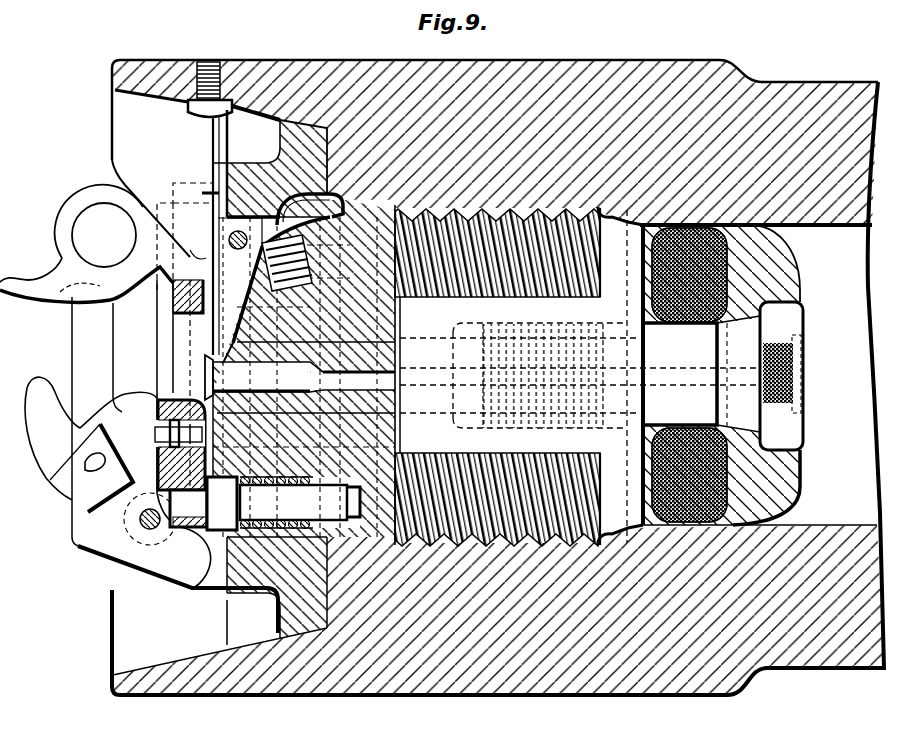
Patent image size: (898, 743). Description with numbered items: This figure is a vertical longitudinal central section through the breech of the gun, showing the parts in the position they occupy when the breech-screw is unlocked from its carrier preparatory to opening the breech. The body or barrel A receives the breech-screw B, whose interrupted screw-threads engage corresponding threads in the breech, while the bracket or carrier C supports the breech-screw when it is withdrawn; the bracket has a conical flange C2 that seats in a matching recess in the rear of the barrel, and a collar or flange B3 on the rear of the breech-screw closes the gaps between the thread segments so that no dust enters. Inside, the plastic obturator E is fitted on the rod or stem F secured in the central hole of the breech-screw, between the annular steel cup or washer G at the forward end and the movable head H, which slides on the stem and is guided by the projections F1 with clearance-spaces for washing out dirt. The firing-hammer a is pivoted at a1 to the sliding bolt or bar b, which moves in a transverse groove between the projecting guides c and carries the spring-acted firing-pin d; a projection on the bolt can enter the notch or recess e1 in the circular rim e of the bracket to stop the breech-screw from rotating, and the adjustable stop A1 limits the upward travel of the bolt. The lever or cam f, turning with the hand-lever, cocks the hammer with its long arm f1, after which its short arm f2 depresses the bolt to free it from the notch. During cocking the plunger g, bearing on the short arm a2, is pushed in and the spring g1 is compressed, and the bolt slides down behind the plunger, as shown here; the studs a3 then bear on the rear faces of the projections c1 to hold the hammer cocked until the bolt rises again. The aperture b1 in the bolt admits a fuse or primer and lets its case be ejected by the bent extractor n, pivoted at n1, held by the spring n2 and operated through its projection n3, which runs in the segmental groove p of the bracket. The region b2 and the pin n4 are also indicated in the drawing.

The body or barrel A is at (498, 377).
The adjustable stop A1 is at (188, 109).
The breech-screw B is at (497, 377).
The collar or flange B3 is at (214, 595).
The bracket or carrier C is at (277, 377).
The taper or conical flange C2 is at (297, 127).
The plastic obturator E is at (466, 372).
The rod or stem F is at (701, 375).
The projections or guides F1 is at (765, 376).
The annular steel cup or washer G is at (640, 258).
The movable head H is at (721, 375).
The firing-hammer a is at (91, 461).
The pivot a1 is at (140, 516).
The short arm a2 is at (184, 540).
The studs or projections a3 is at (89, 458).
The sliding bolt or bar b is at (185, 288).
The aperture b1 is at (193, 405).
The rod shoulder b2 is at (201, 247).
The projecting guides c is at (196, 592).
The projections c1 is at (45, 497).
The firing-pin d is at (156, 434).
The circular rim e is at (215, 182).
The notch or recess e1 is at (202, 236).
The lever or cam f is at (86, 354).
The long arm f1 is at (80, 280).
The short arm f2 is at (172, 292).
The rod or plunger g is at (283, 503).
The spring g1 is at (294, 478).
The bent lever or extractor n is at (240, 261).
The pivot n1 is at (104, 235).
The spring n2 is at (296, 265).
The projection n3 is at (310, 209).
The pawl pin n4 is at (238, 249).
The segmental groove or recess p is at (253, 194).